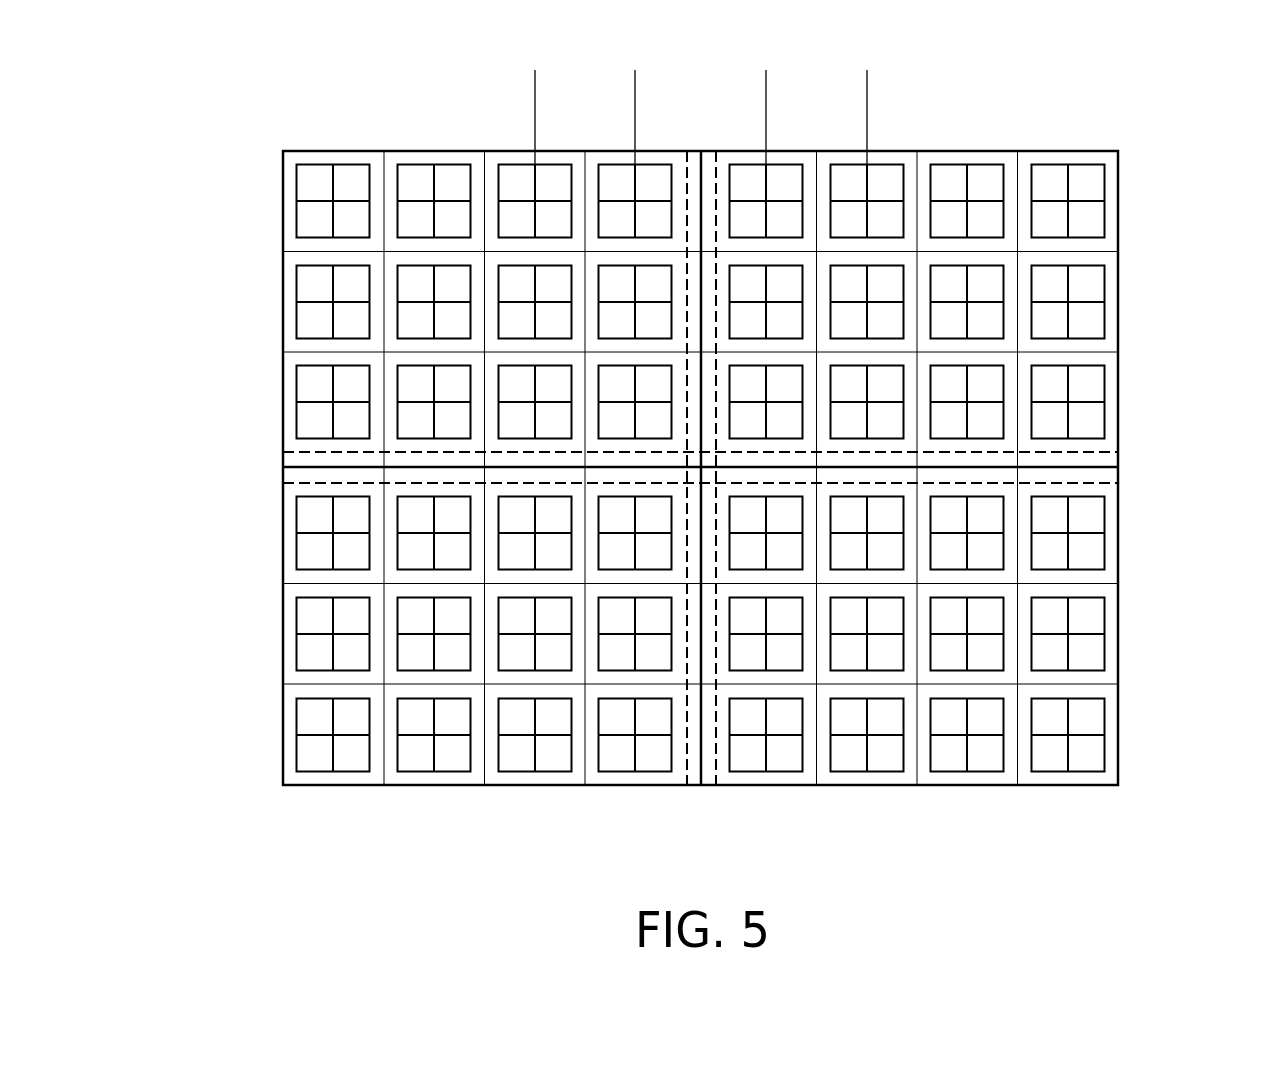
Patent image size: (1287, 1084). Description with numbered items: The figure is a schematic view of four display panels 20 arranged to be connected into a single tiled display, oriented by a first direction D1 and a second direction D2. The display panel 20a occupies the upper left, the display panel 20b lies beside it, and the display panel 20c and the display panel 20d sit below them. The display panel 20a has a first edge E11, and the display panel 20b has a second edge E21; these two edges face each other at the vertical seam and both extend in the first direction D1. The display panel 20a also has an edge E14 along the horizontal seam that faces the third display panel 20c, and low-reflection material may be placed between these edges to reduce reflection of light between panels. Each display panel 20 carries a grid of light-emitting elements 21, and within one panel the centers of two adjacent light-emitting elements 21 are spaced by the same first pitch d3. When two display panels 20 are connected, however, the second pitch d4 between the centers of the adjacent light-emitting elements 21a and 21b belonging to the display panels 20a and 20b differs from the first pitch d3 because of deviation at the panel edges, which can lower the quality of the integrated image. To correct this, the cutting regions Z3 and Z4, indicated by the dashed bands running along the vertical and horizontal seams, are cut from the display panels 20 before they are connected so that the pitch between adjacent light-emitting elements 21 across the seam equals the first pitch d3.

The display panel 20 is at (702, 468).
The display panel 20a is at (288, 120).
The display panel 20b is at (1113, 120).
The third display panel 20c is at (288, 816).
The display panel 20d is at (1113, 816).
The light-emitting element 21 is at (286, 299).
The light-emitting element 21a is at (520, 160).
The light-emitting element 21b is at (883, 160).
The first edge E11 is at (700, 172).
The second edge E21 is at (702, 172).
The edge E14 is at (298, 463).
The cutting region Z3 is at (692, 707).
The cutting region Z4 is at (283, 478).
The first pitch d3 is at (867, 77).
The second pitch d4 is at (766, 77).
The first direction D1 is at (1167, 683).
The second direction D2 is at (1090, 837).